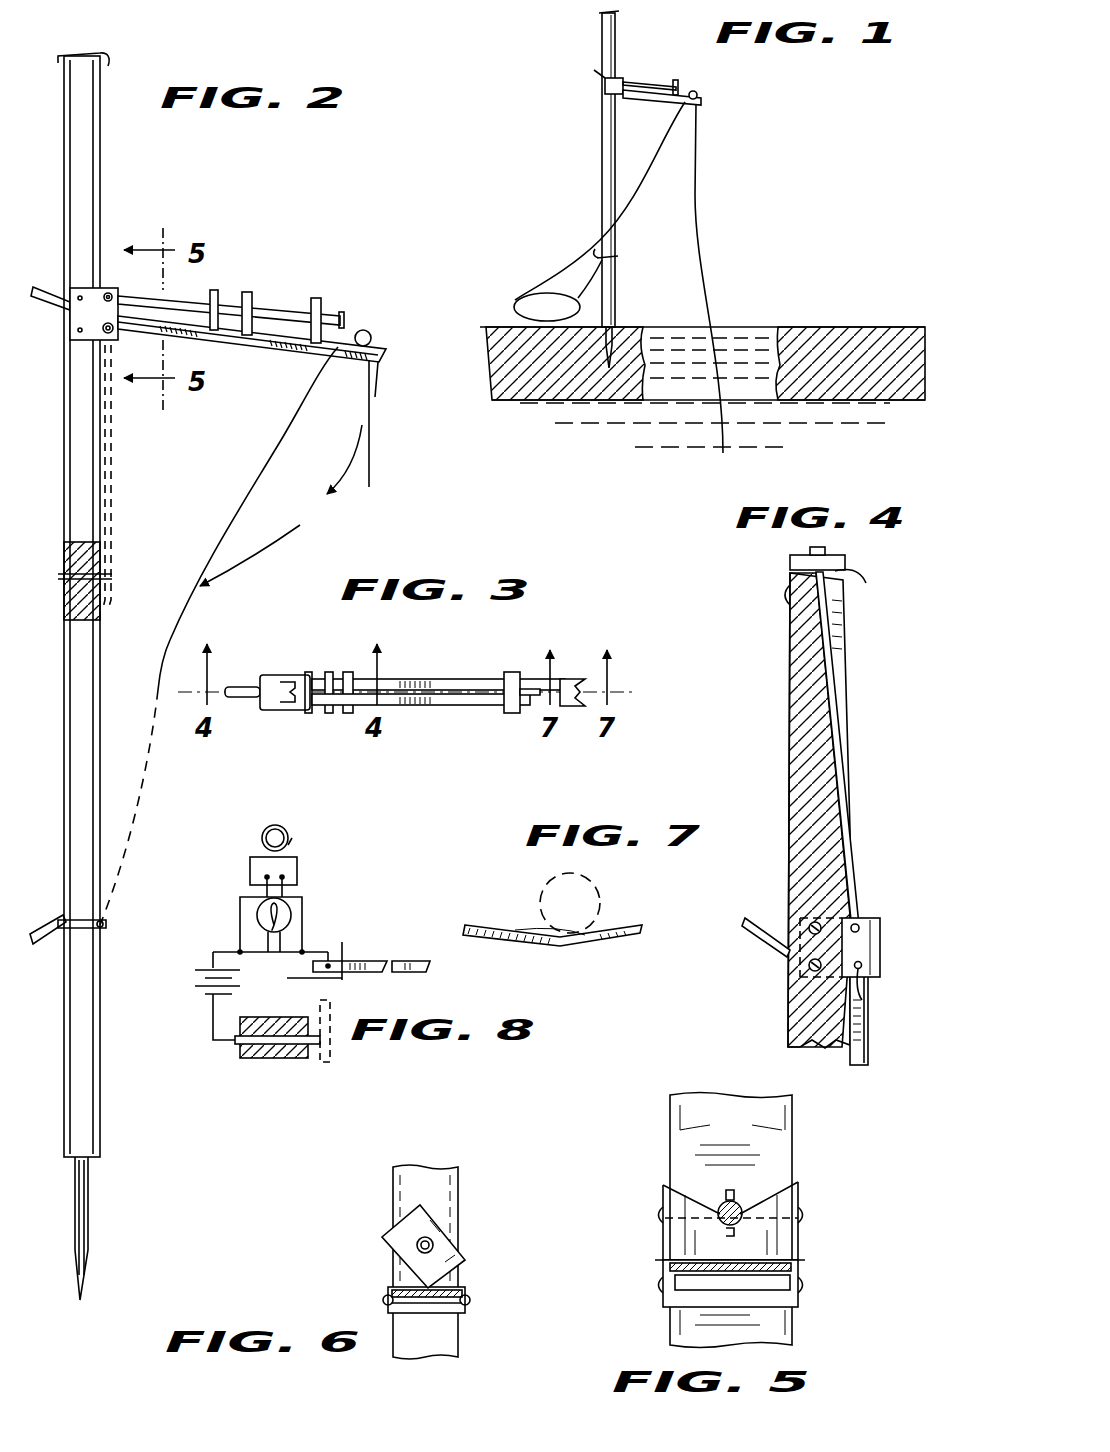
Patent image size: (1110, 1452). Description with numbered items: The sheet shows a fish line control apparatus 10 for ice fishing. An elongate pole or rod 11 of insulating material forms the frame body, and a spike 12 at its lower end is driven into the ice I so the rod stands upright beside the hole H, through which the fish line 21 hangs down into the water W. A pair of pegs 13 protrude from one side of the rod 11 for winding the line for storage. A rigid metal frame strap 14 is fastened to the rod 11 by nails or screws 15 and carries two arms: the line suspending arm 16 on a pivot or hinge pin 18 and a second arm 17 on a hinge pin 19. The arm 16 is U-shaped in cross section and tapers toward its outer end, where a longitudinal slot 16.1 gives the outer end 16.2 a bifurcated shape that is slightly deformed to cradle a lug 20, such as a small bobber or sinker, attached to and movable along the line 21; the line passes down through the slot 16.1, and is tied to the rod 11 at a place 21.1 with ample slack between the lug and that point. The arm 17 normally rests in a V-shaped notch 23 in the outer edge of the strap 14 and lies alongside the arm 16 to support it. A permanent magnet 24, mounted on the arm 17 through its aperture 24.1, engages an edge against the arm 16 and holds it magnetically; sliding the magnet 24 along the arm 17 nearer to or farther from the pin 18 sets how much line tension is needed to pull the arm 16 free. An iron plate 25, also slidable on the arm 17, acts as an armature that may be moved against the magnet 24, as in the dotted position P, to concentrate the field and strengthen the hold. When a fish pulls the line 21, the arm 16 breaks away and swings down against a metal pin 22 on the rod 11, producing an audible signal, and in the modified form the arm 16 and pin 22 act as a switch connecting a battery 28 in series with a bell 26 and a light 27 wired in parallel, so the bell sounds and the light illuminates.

In FIG. 2, the fish line control apparatus 10 is at (122, 238).
In FIG. 1, the fish line control apparatus 10 is at (601, 118).
In FIG. 2, the pole or rod 11 is at (68, 490).
In FIG. 1, the pole or rod 11 is at (608, 144).
In FIG. 5, the pole or rod 11 is at (731, 1220).
In FIG. 2, the spike 12 is at (83, 1217).
In FIG. 2, the pegs 13 is at (47, 960).
In FIG. 4, the pegs 13 is at (766, 937).
In FIG. 2, the frame strap 14 is at (85, 295).
In FIG. 4, the frame strap 14 is at (872, 950).
In FIG. 5, the frame strap 14 is at (680, 1240).
In FIG. 2, the nails or screws 15 is at (80, 330).
In FIG. 2, the line suspending arm 16 is at (260, 350).
In FIG. 3, the line suspending arm 16 is at (452, 684).
In FIG. 4, the line suspending arm 16 is at (870, 1052).
In FIG. 7, the line suspending arm 16 is at (497, 925).
In FIG. 8, the line suspending arm 16 is at (365, 975).
In FIG. 6, the line suspending arm 16 is at (426, 1262).
In FIG. 5, the line suspending arm 16 is at (797, 1263).
In FIG. 3, the slot 16.1 is at (573, 710).
In FIG. 7, the slot 16.1 is at (596, 940).
In FIG. 3, the outer end of arm 16.2 is at (570, 688).
In FIG. 7, the outer end of arm 16.2 is at (608, 923).
In FIG. 2, the second arm 17 is at (290, 300).
In FIG. 3, the second arm 17 is at (463, 695).
In FIG. 4, the second arm 17 is at (844, 758).
In FIG. 5, the second arm 17 is at (742, 1212).
In FIG. 2, the pivot or hinge pin 18 is at (112, 330).
In FIG. 4, the pivot or hinge pin 18 is at (866, 990).
In FIG. 5, the pivot or hinge pin 18 is at (715, 1290).
In FIG. 4, the pivot or hinge pin 19 is at (860, 925).
In FIG. 5, the pivot or hinge pin 19 is at (800, 1215).
In FIG. 2, the lug 20 is at (372, 331).
In FIG. 7, the lug 20 is at (558, 892).
In FIG. 2, the fish line 21 is at (373, 435).
In FIG. 2, the line attachment place 21.1 is at (100, 928).
In FIG. 2, the metal pin 22 is at (110, 575).
In FIG. 8, the metal pin 22 is at (300, 1058).
In FIG. 4, the V-shaped notch 23 is at (880, 940).
In FIG. 5, the V-shaped notch 23 is at (718, 1210).
In FIG. 2, the permanent magnet 24 is at (250, 292).
In FIG. 6, the permanent magnet 24 is at (425, 1215).
In FIG. 6, the aperture 24.1 is at (392, 1255).
In FIG. 2, the iron plate 25 is at (215, 290).
In FIG. 8, the bell 26 is at (297, 860).
In FIG. 8, the light 27 is at (262, 915).
In FIG. 8, the battery 28 is at (218, 966).
In FIG. 2, the dotted line position P is at (322, 300).
In FIG. 1, the water W is at (663, 347).
In FIG. 1, the hole H is at (766, 340).
In FIG. 1, the ice I is at (810, 345).